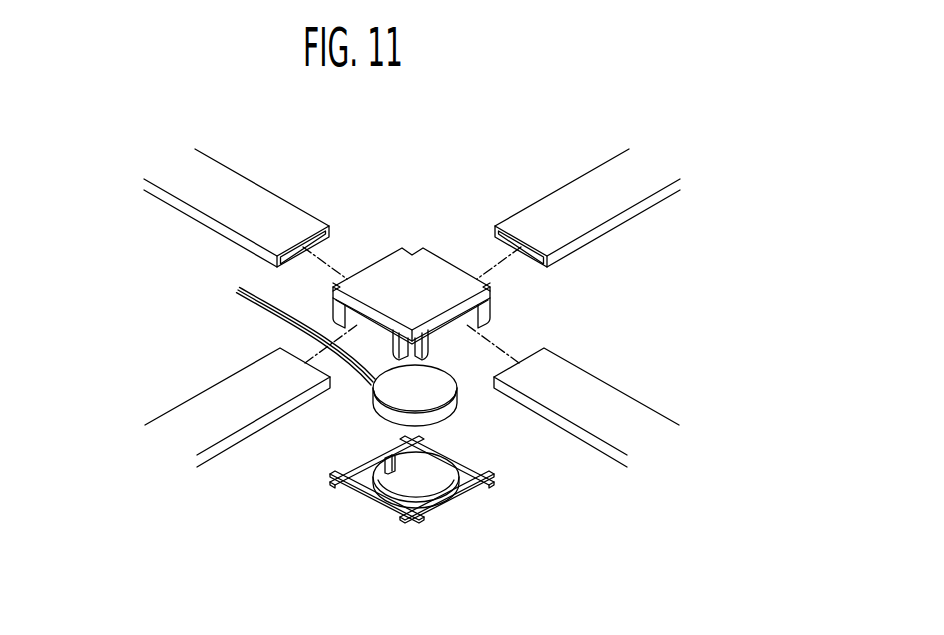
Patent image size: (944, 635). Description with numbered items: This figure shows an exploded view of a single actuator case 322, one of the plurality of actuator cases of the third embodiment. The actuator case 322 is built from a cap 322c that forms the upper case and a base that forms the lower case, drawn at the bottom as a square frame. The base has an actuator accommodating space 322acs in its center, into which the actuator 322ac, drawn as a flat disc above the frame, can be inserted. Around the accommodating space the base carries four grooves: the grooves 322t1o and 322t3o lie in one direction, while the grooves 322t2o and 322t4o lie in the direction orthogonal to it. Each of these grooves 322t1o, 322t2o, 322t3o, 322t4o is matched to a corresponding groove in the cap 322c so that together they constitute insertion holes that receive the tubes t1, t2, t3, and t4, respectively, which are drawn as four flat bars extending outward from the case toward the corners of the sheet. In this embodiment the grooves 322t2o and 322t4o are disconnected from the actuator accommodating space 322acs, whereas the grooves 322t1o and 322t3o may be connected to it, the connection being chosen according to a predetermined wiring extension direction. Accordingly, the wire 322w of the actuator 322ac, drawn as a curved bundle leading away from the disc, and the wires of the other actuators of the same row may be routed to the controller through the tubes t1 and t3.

The actuator case 322 is at (432, 193).
The cap 322c is at (387, 272).
The wire 322w is at (248, 315).
The actuator 322ac is at (462, 400).
The actuator accommodating space 322acs is at (418, 490).
The groove 322t1o is at (373, 456).
The groove 322t2o is at (464, 460).
The groove 322t3o is at (463, 500).
The groove 322t4o is at (370, 502).
The tube t1 is at (238, 186).
The tube t2 is at (592, 184).
The tube t3 is at (606, 400).
The tube t4 is at (218, 400).